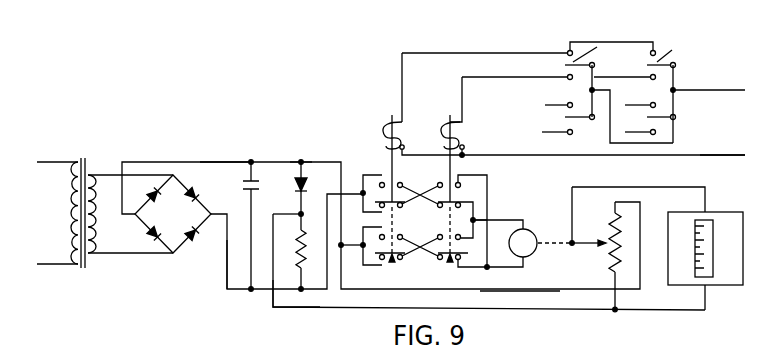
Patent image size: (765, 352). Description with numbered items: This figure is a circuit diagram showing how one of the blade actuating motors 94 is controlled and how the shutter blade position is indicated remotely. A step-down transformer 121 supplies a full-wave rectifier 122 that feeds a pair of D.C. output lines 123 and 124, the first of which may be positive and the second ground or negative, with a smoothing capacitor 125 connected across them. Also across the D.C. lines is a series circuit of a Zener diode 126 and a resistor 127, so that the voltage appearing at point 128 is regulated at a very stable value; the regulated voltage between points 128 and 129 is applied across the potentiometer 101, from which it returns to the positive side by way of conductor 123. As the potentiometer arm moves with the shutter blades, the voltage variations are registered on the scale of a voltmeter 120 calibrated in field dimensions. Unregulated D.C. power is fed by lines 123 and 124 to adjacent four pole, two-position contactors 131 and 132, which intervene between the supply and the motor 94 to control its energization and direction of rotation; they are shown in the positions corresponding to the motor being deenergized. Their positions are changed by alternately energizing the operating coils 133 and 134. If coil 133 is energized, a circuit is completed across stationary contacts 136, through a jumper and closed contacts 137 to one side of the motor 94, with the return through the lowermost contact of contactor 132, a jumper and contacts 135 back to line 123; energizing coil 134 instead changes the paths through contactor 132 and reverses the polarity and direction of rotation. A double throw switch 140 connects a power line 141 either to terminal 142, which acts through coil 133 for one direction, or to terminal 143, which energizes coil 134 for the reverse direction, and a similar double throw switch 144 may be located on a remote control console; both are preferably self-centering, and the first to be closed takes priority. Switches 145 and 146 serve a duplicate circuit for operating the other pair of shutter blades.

The step-down transformer 121 is at (78, 159).
The full-wave rectifier 122 is at (176, 206).
The D.C. output line 123 is at (219, 160).
The D.C. output line 124 is at (226, 265).
The smoothing capacitor 125 is at (279, 191).
The Zener diode 126 is at (304, 186).
The resistor 127 is at (303, 257).
The point 128 is at (301, 212).
The point 129 is at (300, 162).
The contactor 131 is at (391, 262).
The contactor 132 is at (450, 267).
The operating coil 133 is at (380, 127).
The operating coil 134 is at (445, 127).
The stationary contacts 135 is at (396, 222).
The stationary contacts 136 is at (390, 178).
The closed contacts 137 is at (480, 184).
The blade actuating motor 94 is at (552, 225).
The potentiometer 101 is at (608, 258).
The voltmeter 120 is at (721, 210).
The double throw switch 140 is at (600, 43).
The power line 141 is at (745, 91).
The terminal 142 is at (569, 44).
The terminal 143 is at (570, 83).
The double throw switch 144 is at (686, 41).
The switch 145 is at (592, 123).
The switch 146 is at (662, 125).